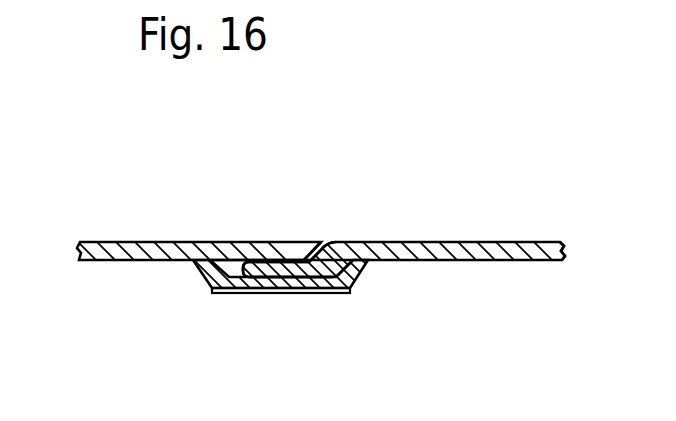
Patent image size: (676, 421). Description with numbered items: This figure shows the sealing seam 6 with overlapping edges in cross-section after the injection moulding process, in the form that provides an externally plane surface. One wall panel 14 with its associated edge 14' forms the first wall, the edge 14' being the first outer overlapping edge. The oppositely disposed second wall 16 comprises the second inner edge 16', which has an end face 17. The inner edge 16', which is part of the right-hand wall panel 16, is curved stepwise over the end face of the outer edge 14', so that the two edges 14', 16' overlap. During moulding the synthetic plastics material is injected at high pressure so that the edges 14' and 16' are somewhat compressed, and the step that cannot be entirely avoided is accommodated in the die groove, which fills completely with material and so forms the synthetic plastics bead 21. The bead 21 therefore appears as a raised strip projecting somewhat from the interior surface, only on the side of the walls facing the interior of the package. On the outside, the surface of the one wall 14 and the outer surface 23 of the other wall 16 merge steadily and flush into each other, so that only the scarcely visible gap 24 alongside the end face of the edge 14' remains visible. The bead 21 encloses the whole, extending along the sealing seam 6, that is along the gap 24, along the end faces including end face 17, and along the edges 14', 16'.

The wall panel 14 is at (177, 231).
The first outer overlapping edge 14' is at (258, 190).
The sealing seam 6 is at (281, 205).
The gap 24 is at (325, 240).
The outer surface 23 is at (500, 241).
The second wall 16 is at (555, 299).
The second inner edge 16' is at (289, 341).
The end face 17 is at (235, 270).
The synthetic plastics bead 21 is at (350, 291).